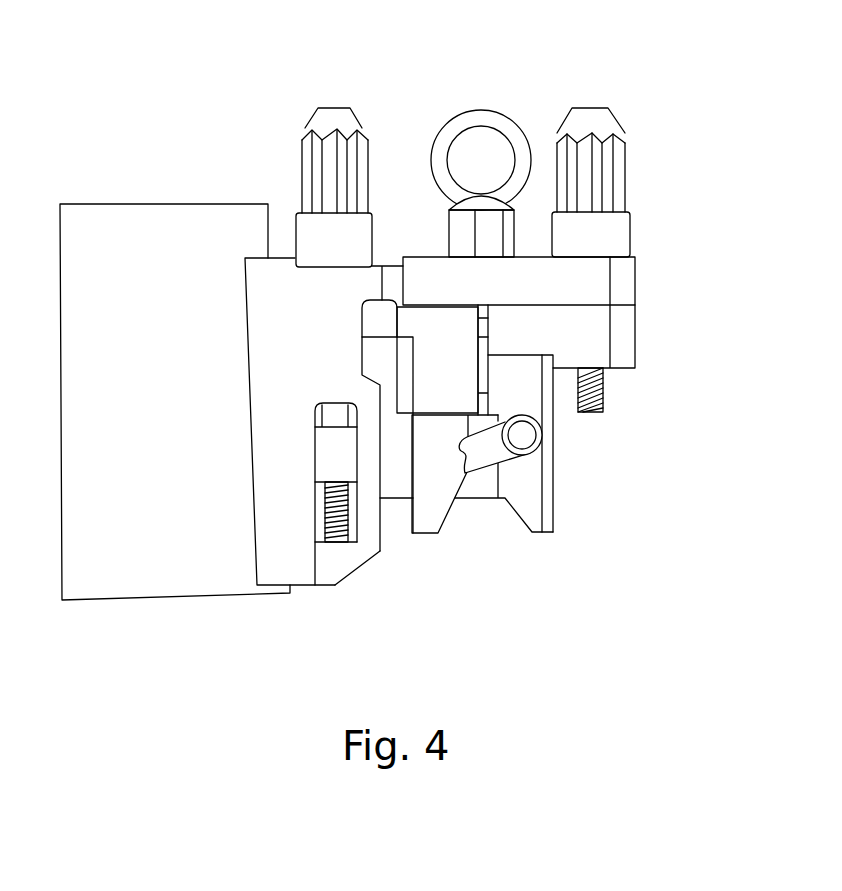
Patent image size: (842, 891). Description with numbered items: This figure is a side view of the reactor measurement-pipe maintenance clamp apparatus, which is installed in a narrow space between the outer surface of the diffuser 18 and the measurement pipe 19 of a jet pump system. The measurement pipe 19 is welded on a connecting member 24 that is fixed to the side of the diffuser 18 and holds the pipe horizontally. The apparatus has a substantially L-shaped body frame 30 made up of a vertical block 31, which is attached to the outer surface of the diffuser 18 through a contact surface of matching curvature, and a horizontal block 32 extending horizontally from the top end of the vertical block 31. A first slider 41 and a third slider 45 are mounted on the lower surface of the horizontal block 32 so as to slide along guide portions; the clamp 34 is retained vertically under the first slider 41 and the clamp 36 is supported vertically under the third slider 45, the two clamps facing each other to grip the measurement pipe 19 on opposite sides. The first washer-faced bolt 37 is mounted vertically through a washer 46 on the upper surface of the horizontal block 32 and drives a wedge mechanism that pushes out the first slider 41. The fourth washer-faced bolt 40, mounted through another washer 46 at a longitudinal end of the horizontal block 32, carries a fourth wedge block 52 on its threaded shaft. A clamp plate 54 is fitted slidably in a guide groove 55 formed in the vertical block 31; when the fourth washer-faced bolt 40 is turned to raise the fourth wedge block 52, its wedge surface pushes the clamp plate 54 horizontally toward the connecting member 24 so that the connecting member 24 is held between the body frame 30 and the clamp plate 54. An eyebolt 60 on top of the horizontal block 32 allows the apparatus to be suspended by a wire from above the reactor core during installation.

The diffuser 18 is at (213, 597).
The measurement pipe 19 is at (545, 432).
The connecting member 24 is at (480, 500).
The body frame 30 is at (388, 257).
The vertical block 31 is at (287, 277).
The horizontal block 32 is at (600, 285).
The clamp 34 is at (533, 533).
The clamp 36 is at (427, 528).
The first washer-faced bolt 37 is at (588, 108).
The fourth washer-faced bolt 40 is at (333, 107).
The first slider 41 is at (622, 365).
The third slider 45 is at (417, 378).
The washer 46 is at (612, 233).
The fourth wedge block 52 is at (357, 518).
The clamp plate 54 is at (313, 533).
The guide groove 55 is at (324, 495).
The eyebolt 60 is at (452, 112).